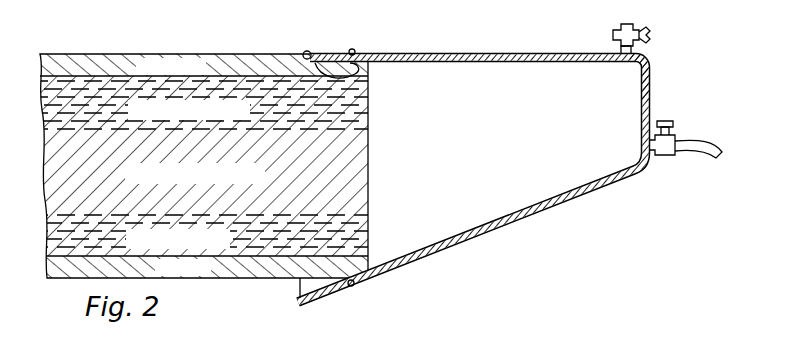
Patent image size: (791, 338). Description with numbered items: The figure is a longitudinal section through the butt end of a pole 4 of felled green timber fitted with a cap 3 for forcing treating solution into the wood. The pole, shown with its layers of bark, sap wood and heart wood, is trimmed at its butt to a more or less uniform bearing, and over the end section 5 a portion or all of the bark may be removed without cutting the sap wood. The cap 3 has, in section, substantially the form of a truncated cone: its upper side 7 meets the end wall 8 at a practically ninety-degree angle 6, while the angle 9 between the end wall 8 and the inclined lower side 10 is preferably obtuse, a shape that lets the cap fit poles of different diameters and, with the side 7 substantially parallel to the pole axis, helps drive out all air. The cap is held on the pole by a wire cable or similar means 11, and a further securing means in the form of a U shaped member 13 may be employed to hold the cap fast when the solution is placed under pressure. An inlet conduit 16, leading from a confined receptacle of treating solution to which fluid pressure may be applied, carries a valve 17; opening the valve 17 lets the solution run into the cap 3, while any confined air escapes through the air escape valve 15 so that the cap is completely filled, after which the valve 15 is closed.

The cap 3 is at (492, 163).
The pole 4 is at (232, 48).
The section 5 is at (365, 83).
The angle 6 is at (606, 64).
The side 7 is at (451, 53).
The end wall 8 is at (651, 78).
The angle 9 is at (641, 132).
The side 10 is at (597, 193).
The wire cable 11 is at (356, 50).
The U shaped member 13 is at (652, 112).
The air escape valve 15 is at (614, 35).
The inlet conduit 16 is at (700, 152).
The valve 17 is at (667, 157).